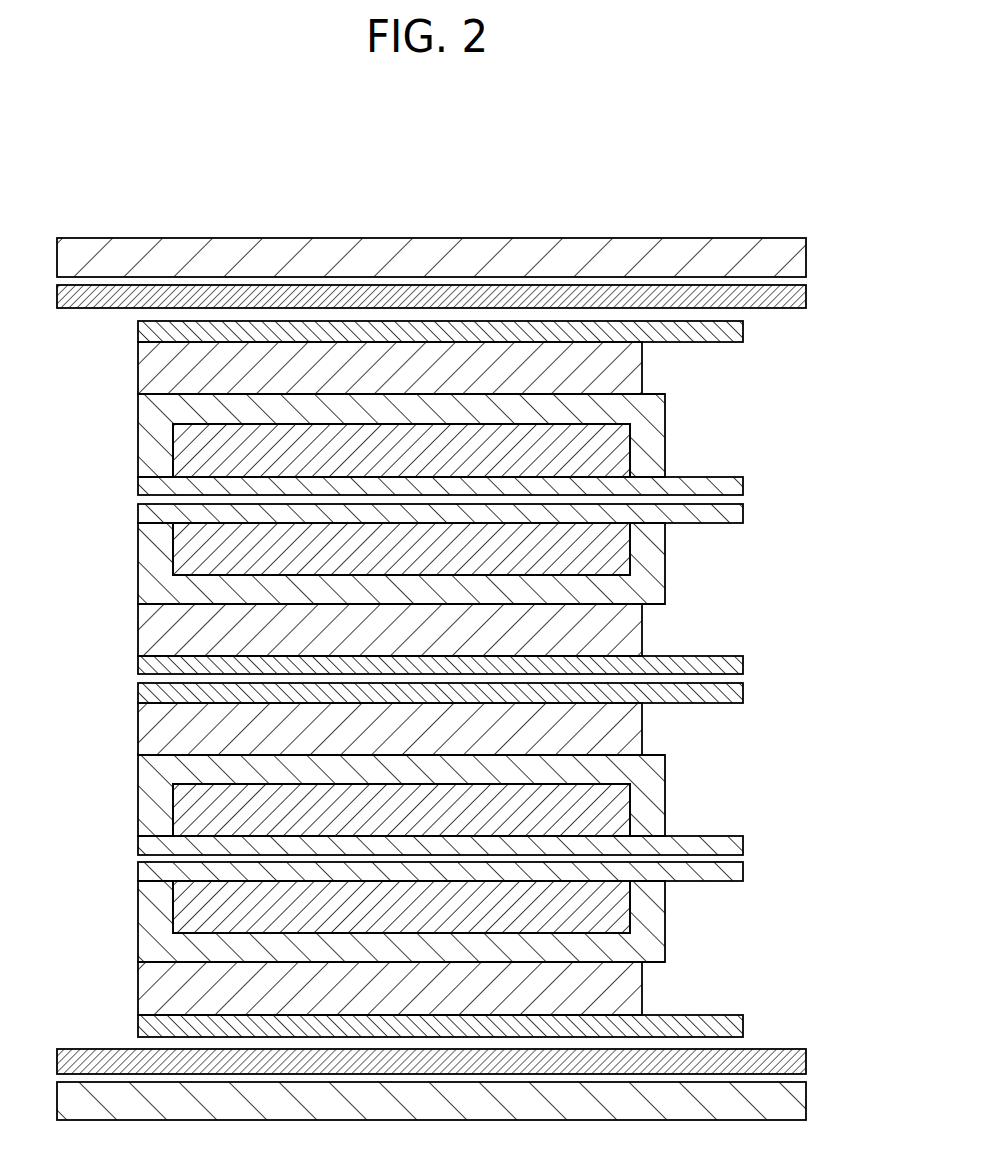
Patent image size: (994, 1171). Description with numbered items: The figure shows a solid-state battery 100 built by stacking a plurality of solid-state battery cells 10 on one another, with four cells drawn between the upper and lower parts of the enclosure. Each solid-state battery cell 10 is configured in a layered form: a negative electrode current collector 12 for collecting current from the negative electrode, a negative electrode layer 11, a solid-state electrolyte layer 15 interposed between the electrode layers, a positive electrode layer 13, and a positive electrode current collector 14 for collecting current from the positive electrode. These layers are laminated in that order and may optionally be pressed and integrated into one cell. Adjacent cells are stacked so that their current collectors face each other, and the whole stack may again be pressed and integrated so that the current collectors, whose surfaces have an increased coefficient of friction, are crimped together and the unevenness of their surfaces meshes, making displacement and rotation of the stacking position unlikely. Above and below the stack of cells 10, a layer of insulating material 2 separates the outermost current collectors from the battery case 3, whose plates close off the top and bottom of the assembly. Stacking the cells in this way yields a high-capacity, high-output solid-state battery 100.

The solid-state battery 100 is at (548, 196).
The solid-state battery cell 10 is at (113, 320).
The negative electrode layer 11 is at (633, 366).
The negative electrode current collector 12 is at (735, 330).
The positive electrode layer 13 is at (622, 455).
The positive electrode current collector 14 is at (735, 487).
The solid-state electrolyte layer 15 is at (657, 412).
The insulating material 2 is at (805, 298).
The battery case 3 is at (795, 255).